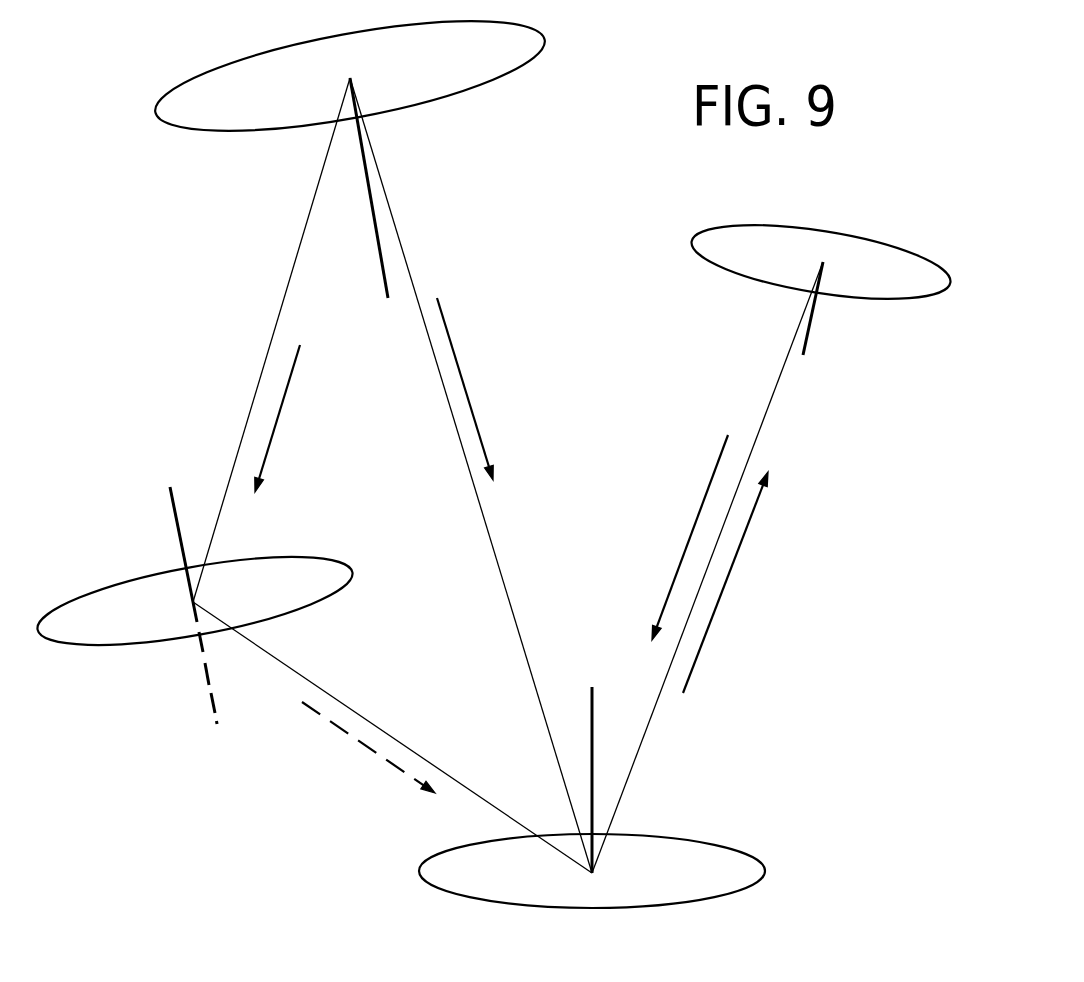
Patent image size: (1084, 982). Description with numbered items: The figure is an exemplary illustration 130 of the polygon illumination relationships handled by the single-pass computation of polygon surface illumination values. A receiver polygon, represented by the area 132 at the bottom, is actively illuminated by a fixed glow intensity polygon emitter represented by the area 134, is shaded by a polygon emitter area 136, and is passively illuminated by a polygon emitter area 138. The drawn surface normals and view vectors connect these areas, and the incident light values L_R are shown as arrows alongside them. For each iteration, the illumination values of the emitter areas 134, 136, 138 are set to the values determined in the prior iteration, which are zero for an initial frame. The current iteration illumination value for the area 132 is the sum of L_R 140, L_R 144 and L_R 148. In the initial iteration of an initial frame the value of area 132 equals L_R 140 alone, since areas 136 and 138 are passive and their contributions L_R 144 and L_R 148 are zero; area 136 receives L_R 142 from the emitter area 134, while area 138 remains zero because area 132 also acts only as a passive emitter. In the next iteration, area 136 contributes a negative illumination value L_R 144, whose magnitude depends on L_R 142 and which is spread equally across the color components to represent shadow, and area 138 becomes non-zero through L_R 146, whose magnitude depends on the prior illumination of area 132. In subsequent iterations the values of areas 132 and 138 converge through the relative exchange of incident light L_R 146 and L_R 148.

The exemplary illustration 130 is at (594, 226).
The receiver polygon area 132 is at (720, 842).
The fixed glow intensity polygon emitter area 134 is at (202, 130).
The shading polygon emitter area 136 is at (118, 645).
The passive polygon emitter area 138 is at (882, 297).
The illumination value L_R from emitter 134 to receiver 132 140 is at (453, 352).
The illumination value L_R from emitter 134 to area 136 142 is at (292, 377).
The negative illumination value L_R from area 136 to receiver 132 144 is at (370, 752).
The incident light L_R from receiver 132 to area 138 146 is at (743, 543).
The incident light L_R from area 138 to receiver 132 148 is at (708, 492).